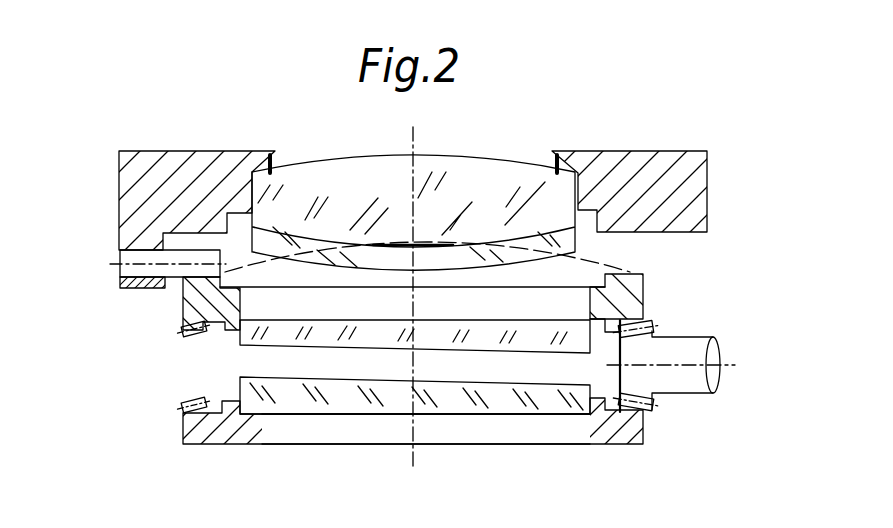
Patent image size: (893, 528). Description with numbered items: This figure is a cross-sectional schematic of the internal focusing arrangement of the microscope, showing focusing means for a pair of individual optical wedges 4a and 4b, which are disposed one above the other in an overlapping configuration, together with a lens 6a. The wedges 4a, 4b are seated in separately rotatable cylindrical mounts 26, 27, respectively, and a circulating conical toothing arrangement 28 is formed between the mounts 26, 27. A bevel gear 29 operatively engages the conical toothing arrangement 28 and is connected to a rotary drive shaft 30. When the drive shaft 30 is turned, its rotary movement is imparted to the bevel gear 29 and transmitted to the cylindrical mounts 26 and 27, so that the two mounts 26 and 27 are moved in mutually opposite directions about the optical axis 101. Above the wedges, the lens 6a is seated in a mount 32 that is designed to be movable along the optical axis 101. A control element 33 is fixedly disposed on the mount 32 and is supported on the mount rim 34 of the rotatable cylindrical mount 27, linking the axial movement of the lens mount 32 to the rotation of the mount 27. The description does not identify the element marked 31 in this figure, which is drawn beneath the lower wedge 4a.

The optical axis 101 is at (417, 140).
The upper fixed frame 32 is at (652, 180).
The lens 6a is at (305, 182).
The spherical seat surface 34 is at (243, 270).
The pin 33 is at (140, 258).
The intermediate frame 27 is at (632, 288).
The pin 29 is at (652, 334).
The shaft 30 is at (700, 351).
The pins 28 is at (188, 365).
The wedge prism 4b is at (275, 337).
The wedge prism 4a is at (292, 395).
The lower frame 26 is at (183, 440).
The bottom plate 31 is at (447, 455).